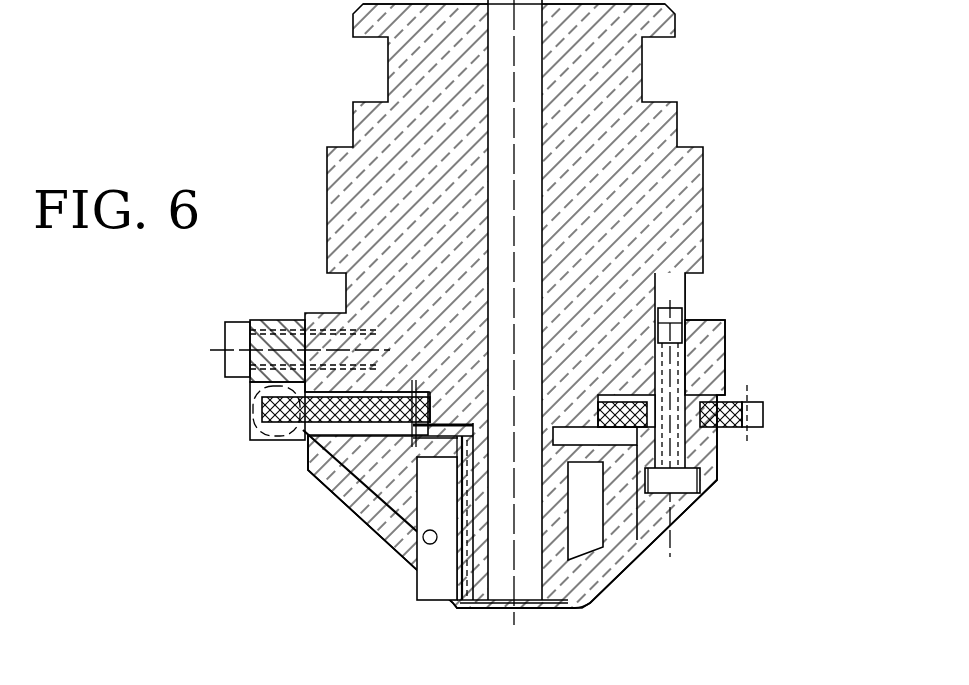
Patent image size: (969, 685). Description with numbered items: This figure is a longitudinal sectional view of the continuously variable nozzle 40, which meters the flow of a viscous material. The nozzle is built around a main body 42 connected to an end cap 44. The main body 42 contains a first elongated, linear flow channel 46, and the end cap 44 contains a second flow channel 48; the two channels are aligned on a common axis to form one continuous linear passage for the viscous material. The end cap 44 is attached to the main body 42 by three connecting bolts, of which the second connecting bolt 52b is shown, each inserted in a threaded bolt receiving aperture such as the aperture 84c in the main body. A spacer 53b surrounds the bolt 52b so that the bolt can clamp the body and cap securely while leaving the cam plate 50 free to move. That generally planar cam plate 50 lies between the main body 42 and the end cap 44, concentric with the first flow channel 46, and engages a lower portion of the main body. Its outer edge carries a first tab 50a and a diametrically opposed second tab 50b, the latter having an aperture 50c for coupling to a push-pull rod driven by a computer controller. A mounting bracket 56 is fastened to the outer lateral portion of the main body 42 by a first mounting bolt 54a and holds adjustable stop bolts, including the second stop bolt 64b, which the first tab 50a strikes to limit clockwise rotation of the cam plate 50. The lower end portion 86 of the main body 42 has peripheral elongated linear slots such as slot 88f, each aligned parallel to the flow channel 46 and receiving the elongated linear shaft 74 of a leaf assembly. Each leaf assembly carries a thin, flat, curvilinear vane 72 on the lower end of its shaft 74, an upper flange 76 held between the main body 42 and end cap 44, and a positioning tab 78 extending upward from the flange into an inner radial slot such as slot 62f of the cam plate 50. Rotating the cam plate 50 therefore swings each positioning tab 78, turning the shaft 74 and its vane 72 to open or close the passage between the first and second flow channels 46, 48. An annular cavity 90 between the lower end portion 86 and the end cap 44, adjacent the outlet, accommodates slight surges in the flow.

The continuously variable nozzle 40 is at (246, 104).
The main body 42 is at (690, 120).
The end cap 44 is at (632, 580).
The first flow channel 46 is at (542, 150).
The second flow channel 48 is at (537, 612).
The cam plate 50 is at (774, 392).
The first tab 50a is at (262, 398).
The second tab 50b is at (764, 421).
The aperture 50c is at (750, 432).
The second connecting bolt 52b is at (686, 492).
The spacer 53b is at (700, 396).
The first mounting bolt 54a is at (225, 328).
The mounting bracket 56 is at (272, 320).
The inner radial slot 62f is at (402, 433).
The second stop bolt 64b is at (250, 440).
The vane 72 is at (497, 610).
The elongated linear shaft 74 is at (456, 468).
The upper flange 76 is at (430, 448).
The positioning tab 78 is at (392, 432).
The threaded bolt receiving aperture 84c is at (668, 352).
The lower end portion 86 is at (578, 562).
The elongated linear slot 88f is at (462, 494).
The annular cavity 90 is at (436, 530).